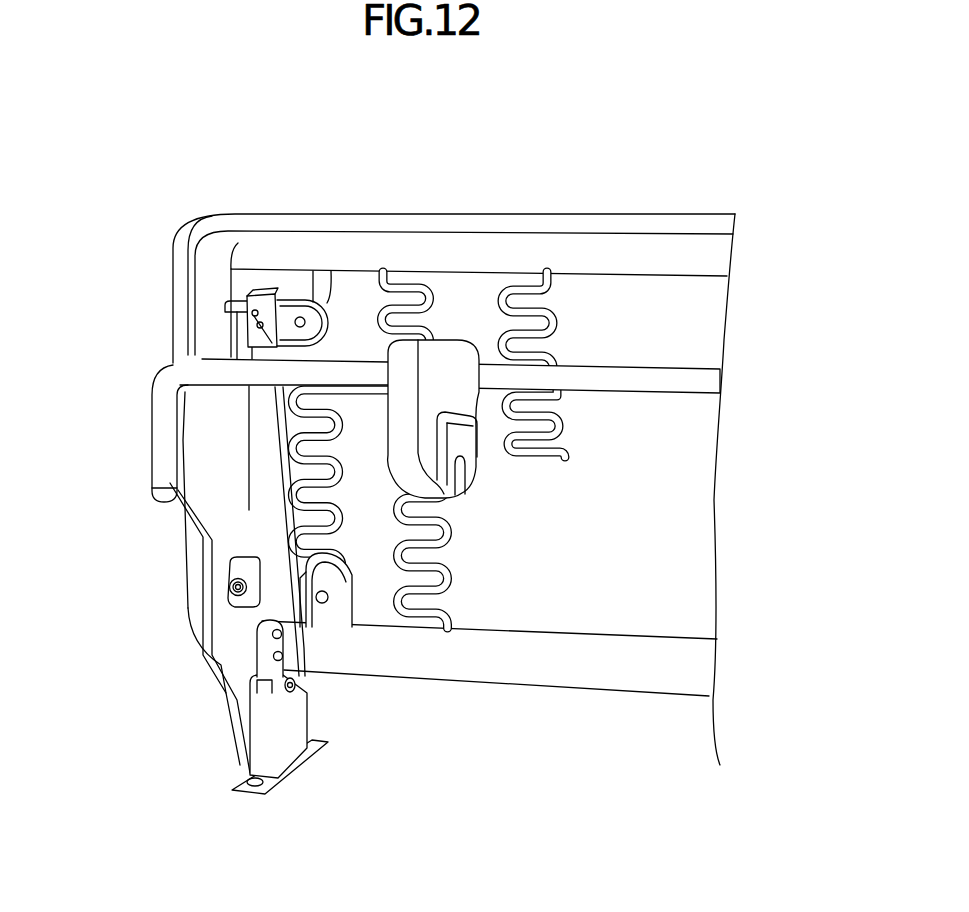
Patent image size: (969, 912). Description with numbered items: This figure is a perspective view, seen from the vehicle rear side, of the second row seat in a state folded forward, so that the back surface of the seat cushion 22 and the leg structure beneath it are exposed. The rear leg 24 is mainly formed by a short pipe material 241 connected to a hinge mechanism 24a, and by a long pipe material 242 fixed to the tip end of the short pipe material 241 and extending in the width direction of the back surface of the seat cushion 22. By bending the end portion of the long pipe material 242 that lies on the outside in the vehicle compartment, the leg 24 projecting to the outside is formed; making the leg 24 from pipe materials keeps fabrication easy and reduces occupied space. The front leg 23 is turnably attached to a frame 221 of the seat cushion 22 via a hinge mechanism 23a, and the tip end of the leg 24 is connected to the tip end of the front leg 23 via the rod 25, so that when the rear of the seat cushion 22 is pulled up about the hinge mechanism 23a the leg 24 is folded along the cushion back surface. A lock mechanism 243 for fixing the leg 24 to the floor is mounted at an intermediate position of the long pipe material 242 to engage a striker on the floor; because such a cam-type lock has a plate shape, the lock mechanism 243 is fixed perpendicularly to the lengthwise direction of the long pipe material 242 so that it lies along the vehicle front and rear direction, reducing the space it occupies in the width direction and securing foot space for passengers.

The seat cushion 22 is at (612, 222).
The frame 221 is at (262, 503).
The front leg 23 is at (302, 718).
The hinge mechanism 23a is at (297, 685).
The rear leg 24 is at (156, 409).
The hinge mechanism 24a is at (289, 300).
The short pipe material 241 is at (247, 345).
The long pipe material 242 is at (688, 377).
The lock mechanism 243 is at (478, 453).
The rod 25 is at (212, 612).